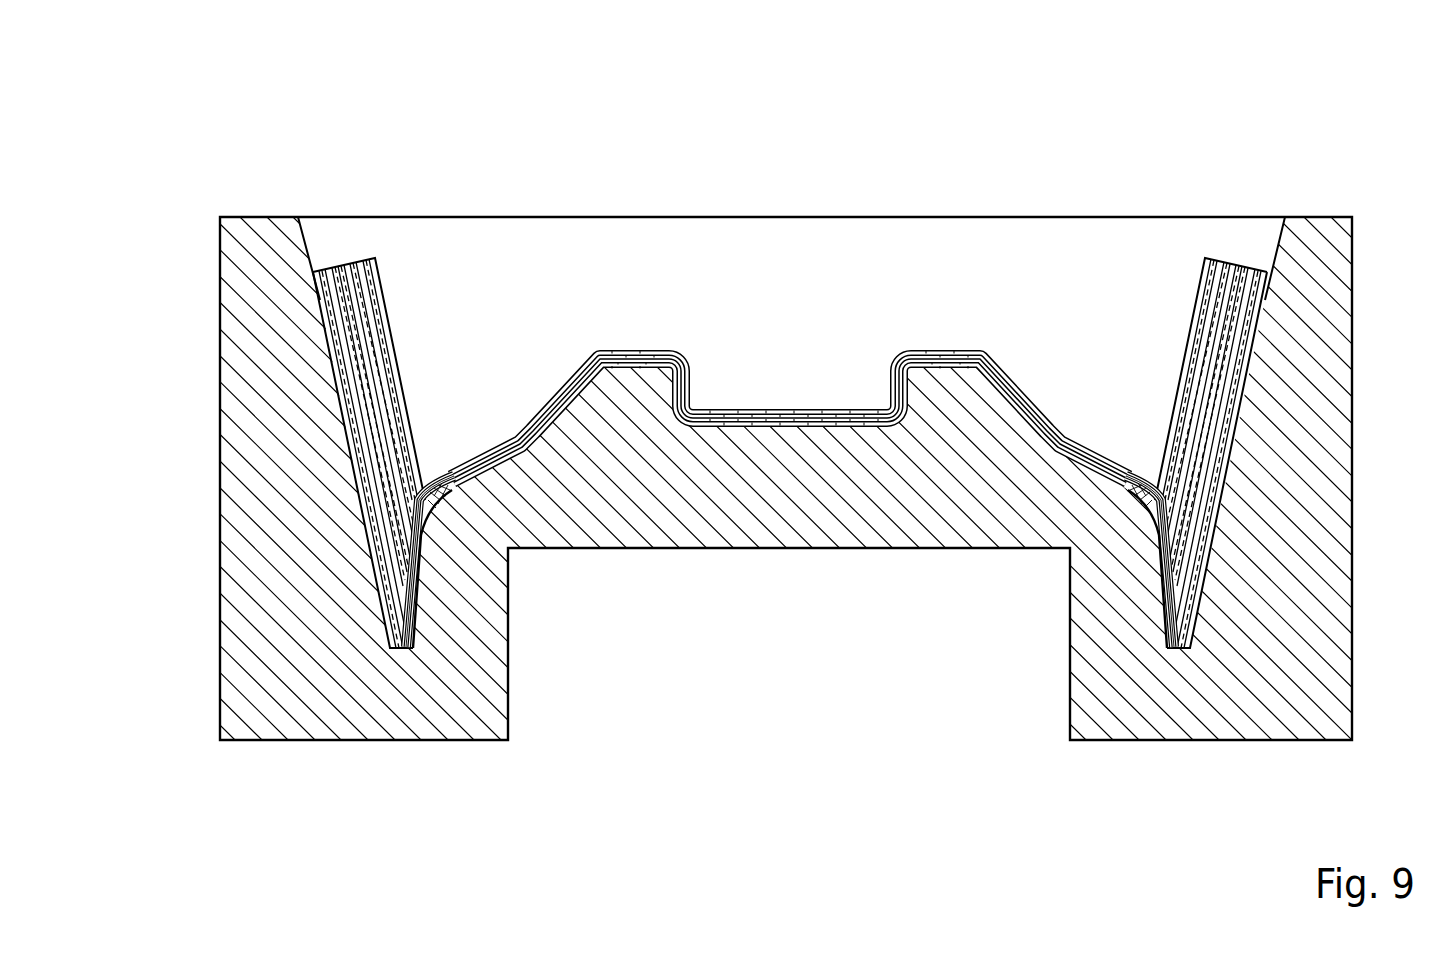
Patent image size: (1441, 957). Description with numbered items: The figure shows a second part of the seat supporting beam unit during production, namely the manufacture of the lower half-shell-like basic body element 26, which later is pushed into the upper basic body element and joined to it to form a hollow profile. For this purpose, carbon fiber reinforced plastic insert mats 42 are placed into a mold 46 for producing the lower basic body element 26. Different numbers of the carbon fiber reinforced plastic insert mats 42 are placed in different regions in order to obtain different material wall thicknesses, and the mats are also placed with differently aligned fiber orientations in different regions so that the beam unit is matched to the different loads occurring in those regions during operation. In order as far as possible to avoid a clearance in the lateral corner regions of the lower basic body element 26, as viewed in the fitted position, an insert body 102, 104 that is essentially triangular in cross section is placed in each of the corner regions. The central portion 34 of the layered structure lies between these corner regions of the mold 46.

The lower half-shell-like basic body element 26 is at (553, 393).
The central portion of membrane 34 is at (745, 410).
The carbon fiber reinforced plastic insert mats 42 is at (350, 372).
The mold 46 is at (310, 668).
The insert body 102 is at (1155, 497).
The insert body 104 is at (430, 495).